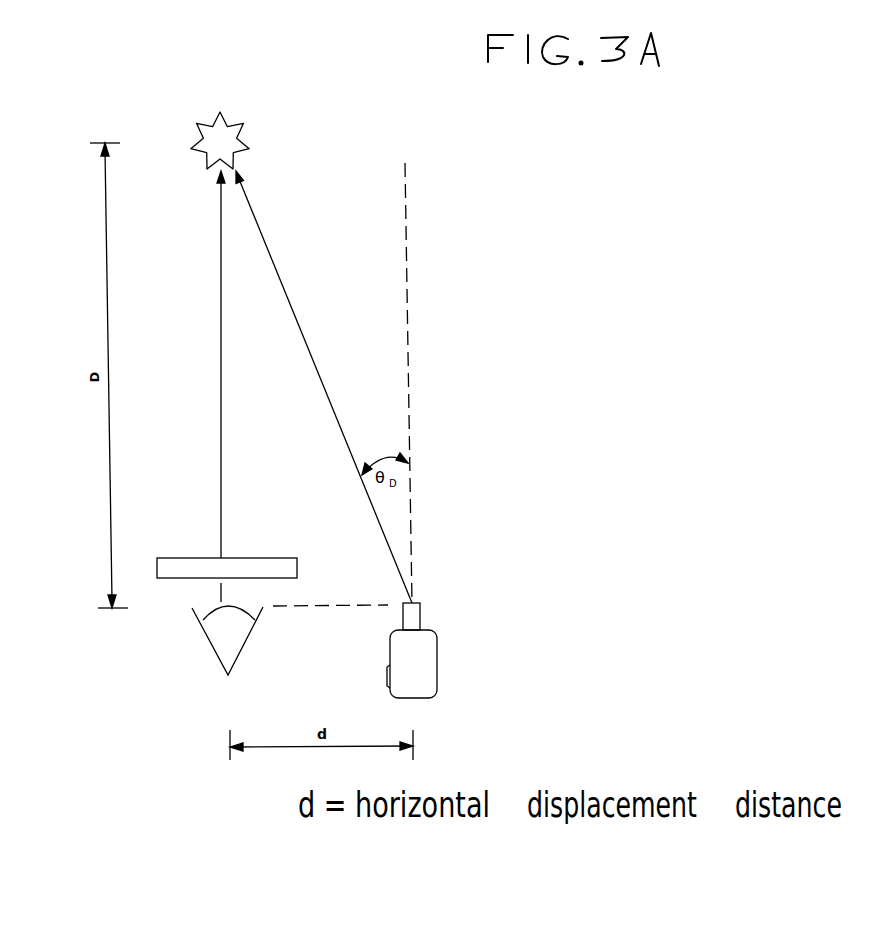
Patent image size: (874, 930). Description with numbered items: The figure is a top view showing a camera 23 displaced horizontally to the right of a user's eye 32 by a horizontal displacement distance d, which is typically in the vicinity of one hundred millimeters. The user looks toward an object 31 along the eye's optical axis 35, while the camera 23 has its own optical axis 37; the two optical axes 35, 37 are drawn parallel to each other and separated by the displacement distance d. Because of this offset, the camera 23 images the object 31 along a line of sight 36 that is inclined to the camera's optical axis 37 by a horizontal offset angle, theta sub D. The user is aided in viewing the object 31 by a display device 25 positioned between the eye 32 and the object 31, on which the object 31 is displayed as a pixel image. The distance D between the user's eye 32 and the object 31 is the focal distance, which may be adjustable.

The object 31 is at (220, 112).
The optical axis of the user's eye 35 is at (222, 368).
The camera's line of sight 36 is at (290, 305).
The optical axis of the camera 37 is at (407, 332).
The display device 25 is at (177, 558).
The user's eye 32 is at (202, 647).
The camera 23 is at (440, 663).